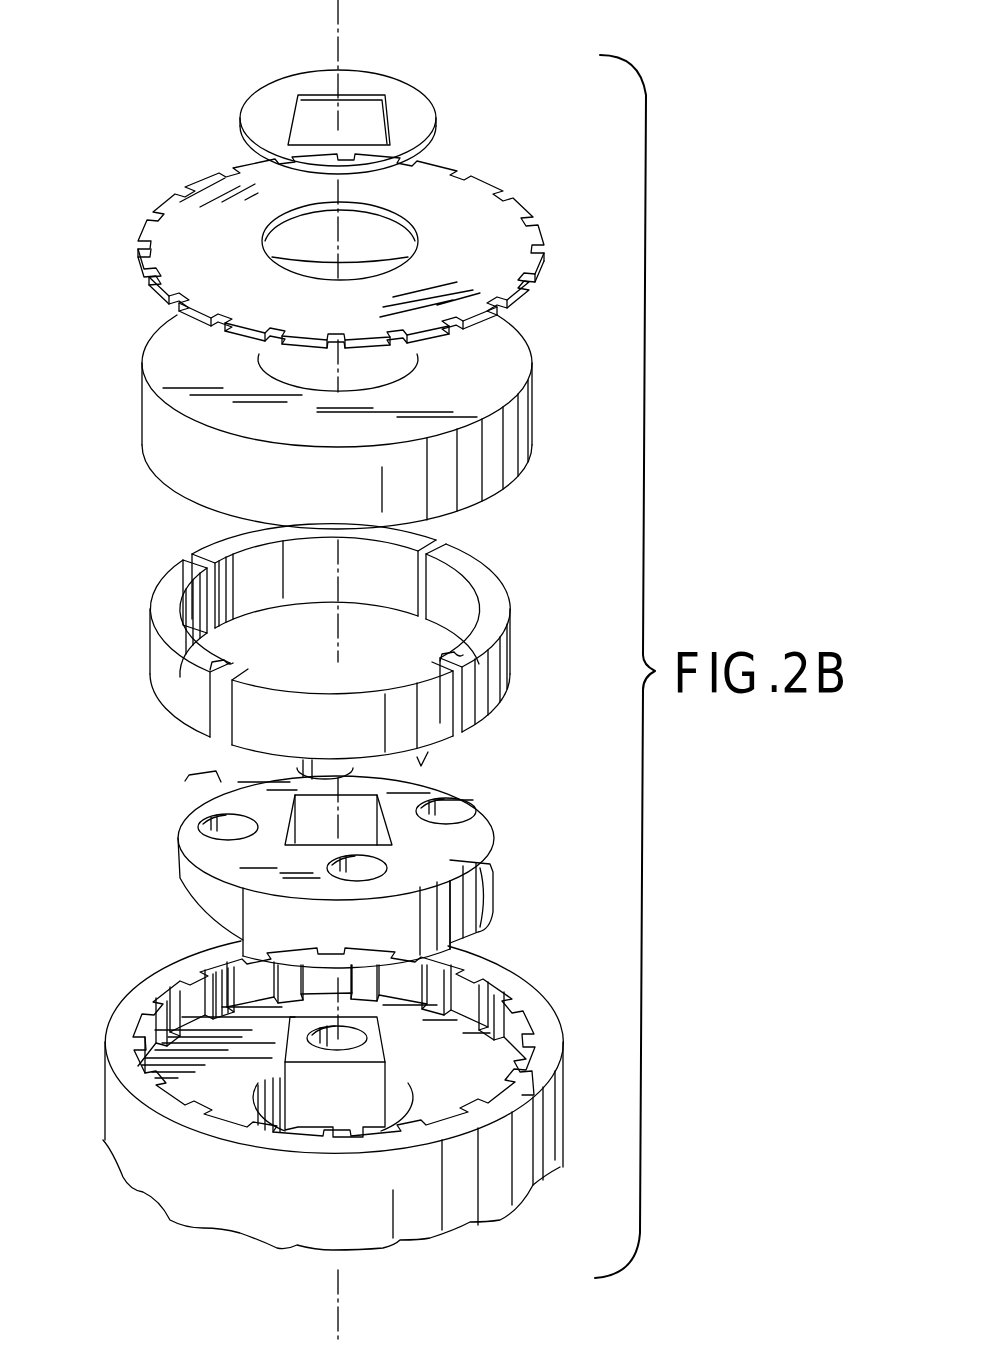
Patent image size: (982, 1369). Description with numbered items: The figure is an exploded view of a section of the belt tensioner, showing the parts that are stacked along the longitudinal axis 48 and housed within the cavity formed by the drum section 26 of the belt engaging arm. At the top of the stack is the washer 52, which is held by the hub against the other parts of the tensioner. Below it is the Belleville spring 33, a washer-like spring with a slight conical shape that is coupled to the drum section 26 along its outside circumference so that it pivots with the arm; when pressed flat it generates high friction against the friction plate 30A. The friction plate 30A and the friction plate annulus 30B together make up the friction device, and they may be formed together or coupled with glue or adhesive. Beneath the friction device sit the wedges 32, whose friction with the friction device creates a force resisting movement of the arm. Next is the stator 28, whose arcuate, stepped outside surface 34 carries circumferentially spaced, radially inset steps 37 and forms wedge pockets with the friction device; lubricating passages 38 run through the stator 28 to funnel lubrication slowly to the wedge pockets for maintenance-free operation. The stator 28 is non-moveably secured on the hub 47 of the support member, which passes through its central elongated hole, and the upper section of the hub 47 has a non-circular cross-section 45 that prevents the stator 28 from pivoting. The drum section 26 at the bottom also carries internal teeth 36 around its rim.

The longitudinal axis 48 is at (344, 17).
The washer 52 is at (413, 107).
The Belleville spring 33 is at (535, 213).
The friction plate 30A is at (490, 385).
The friction plate annulus 30B is at (505, 437).
The wedges 32 is at (496, 576).
The stator 28 is at (337, 855).
The radially inset steps 37 is at (210, 773).
The lubricating passages 38 is at (213, 818).
The outside surface 34 is at (208, 878).
The drum section 26 is at (338, 1095).
The internal teeth of housing 36 is at (177, 990).
The hub 47 is at (333, 1077).
The non-circular cross-section 45 is at (302, 1040).